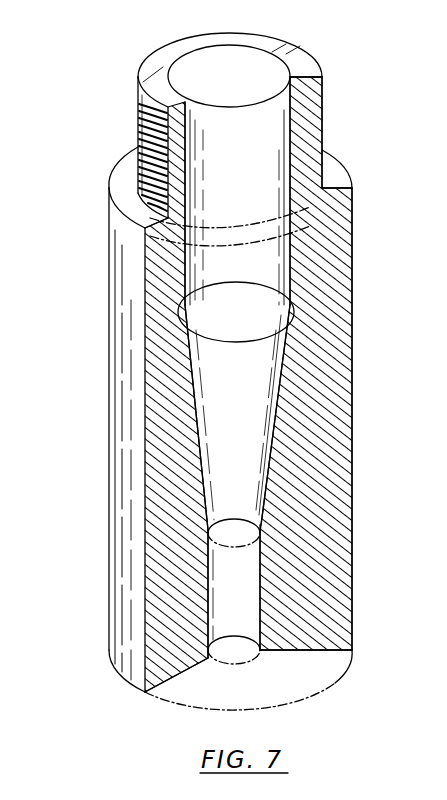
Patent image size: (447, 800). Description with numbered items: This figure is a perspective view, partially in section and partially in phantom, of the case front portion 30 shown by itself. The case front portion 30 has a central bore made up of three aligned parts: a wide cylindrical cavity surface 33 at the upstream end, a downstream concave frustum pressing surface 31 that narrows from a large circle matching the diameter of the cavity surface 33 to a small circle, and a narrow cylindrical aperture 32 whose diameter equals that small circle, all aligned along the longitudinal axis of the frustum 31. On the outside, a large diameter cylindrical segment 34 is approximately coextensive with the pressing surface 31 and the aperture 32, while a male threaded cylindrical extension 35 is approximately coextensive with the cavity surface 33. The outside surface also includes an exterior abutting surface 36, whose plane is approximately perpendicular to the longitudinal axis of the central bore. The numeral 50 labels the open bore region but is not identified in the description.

The case front portion 30 is at (100, 245).
The downstream concave frustum pressing surface 31 is at (210, 450).
The narrow cylindrical aperture 32 is at (212, 668).
The wide cylindrical cavity surface 33 is at (205, 278).
The large diameter cylindrical segment 34 is at (122, 377).
The male threaded cylindrical extension 35 is at (140, 130).
The exterior abutting surface 36 is at (310, 650).
The central bore 50 is at (205, 67).